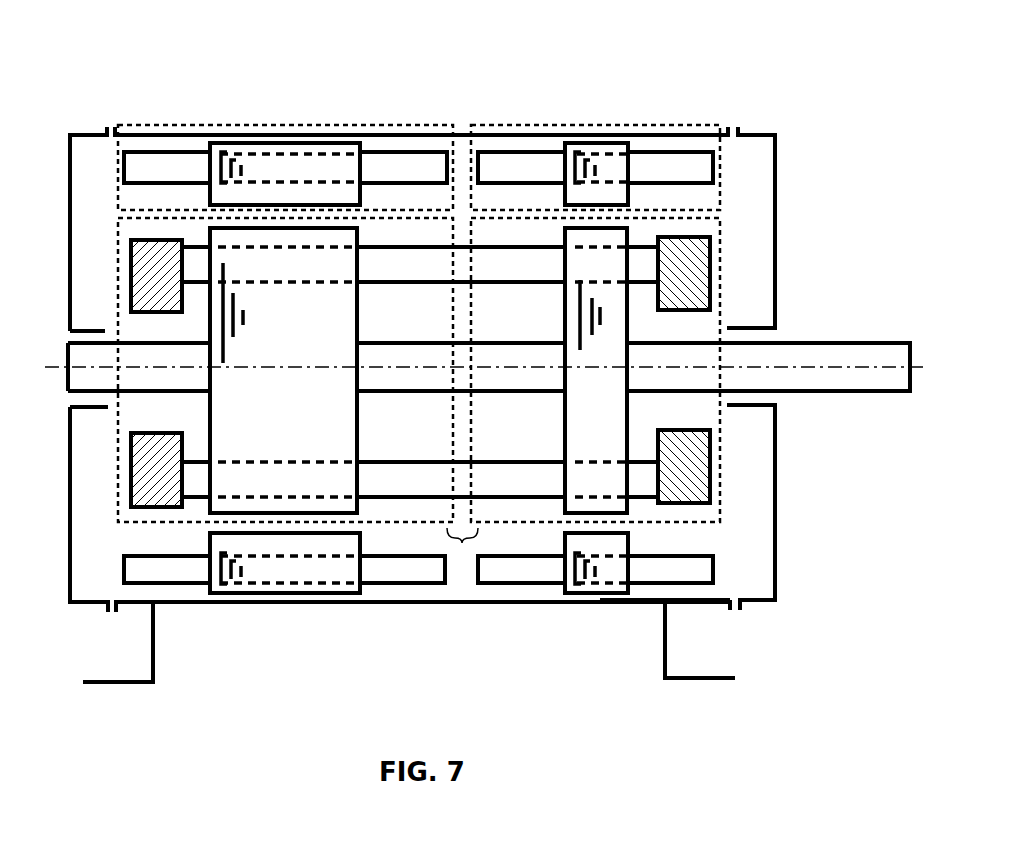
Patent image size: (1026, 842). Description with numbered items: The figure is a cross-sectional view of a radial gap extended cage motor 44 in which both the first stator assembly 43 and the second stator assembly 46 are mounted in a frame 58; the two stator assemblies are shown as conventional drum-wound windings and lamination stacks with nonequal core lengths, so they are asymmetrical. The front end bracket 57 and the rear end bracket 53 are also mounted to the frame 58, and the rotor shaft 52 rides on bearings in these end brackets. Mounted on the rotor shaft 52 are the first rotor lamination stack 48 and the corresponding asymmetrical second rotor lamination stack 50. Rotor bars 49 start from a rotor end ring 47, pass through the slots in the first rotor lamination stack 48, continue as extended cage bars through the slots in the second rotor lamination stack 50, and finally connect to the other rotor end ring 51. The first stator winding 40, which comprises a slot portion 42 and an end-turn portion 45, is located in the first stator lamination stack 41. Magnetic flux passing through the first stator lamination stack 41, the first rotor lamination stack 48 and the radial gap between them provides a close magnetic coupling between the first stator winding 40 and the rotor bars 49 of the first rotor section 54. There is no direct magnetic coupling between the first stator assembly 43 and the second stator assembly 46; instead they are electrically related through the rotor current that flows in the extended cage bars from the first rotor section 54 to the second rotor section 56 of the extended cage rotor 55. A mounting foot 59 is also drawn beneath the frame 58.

The first stator winding 40 is at (110, 169).
The first stator lamination stack 41 is at (255, 192).
The slot portion 42 is at (300, 153).
The first stator assembly 43 is at (340, 125).
The radial gap extended cage motor 44 is at (419, 348).
The end-turn portion 45 is at (418, 152).
The second stator assembly 46 is at (683, 125).
The rotor end ring 47 is at (148, 265).
The first rotor lamination stack 48 is at (286, 442).
The rotor bars 49 is at (495, 274).
The second rotor lamination stack 50 is at (584, 441).
The rotor end ring 51 is at (697, 258).
The rotor shaft 52 is at (822, 380).
The rear end bracket 53 is at (70, 497).
The first rotor section 54 is at (425, 522).
The extended cage rotor 55 is at (462, 540).
The second rotor section 56 is at (505, 522).
The front end bracket 57 is at (777, 511).
The frame 58 is at (695, 600).
The mounting foot 59 is at (690, 680).